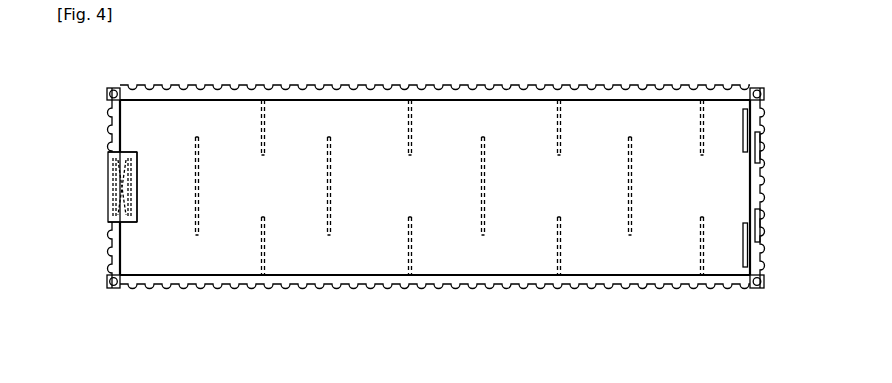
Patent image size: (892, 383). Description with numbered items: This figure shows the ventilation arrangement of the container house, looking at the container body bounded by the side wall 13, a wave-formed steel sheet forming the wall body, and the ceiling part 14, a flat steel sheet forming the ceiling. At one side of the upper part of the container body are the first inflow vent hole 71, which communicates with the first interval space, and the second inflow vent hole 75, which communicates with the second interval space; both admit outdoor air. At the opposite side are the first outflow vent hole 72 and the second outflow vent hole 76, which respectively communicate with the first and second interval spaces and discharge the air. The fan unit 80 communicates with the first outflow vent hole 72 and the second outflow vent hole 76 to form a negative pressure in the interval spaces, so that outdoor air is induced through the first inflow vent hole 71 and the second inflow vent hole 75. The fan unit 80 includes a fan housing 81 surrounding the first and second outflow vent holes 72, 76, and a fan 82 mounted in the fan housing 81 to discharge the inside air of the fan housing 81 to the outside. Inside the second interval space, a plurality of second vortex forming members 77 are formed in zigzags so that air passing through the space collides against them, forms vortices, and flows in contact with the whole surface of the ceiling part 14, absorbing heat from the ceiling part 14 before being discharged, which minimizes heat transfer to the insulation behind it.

The side wall 13 is at (338, 85).
The ceiling part 14 is at (528, 125).
The first inflow vent hole 71 is at (761, 222).
The first outflow vent hole 72 is at (138, 160).
The second inflow vent hole 75 is at (743, 236).
The second outflow vent hole 76 is at (112, 200).
The second vortex forming members 77 is at (481, 165).
The fan unit 80 is at (210, 343).
The fan housing 81 is at (137, 200).
The fan 82 is at (122, 214).